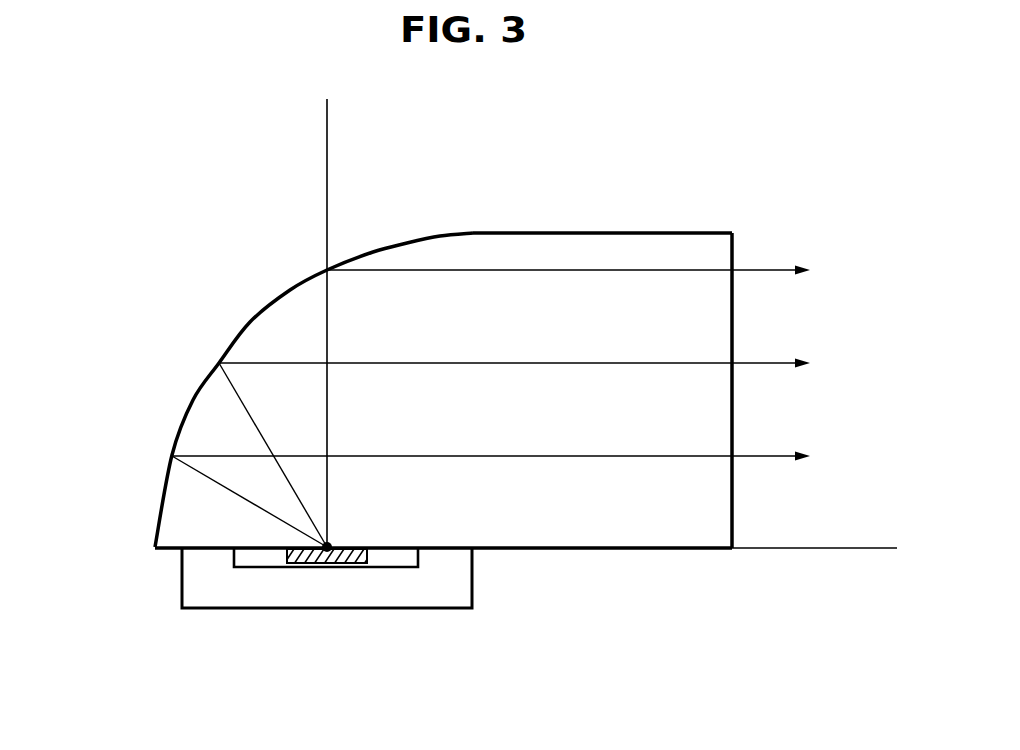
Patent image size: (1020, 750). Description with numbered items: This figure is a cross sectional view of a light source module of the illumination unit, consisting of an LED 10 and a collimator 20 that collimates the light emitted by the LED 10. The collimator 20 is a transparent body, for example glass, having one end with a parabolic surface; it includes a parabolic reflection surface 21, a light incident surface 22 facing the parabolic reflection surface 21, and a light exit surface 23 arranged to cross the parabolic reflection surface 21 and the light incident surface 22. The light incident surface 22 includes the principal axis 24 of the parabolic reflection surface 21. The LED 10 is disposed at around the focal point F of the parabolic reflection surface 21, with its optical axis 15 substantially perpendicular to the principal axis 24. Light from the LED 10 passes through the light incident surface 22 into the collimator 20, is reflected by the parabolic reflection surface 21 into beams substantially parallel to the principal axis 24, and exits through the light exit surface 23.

The LED 10 is at (170, 574).
The optical axis 15 is at (327, 197).
The collimator 20 is at (482, 376).
The parabolic reflection surface 21 is at (250, 322).
The light incident surface 22 is at (600, 549).
The light exit surface 23 is at (733, 255).
The principal axis 24 is at (817, 548).
The focal point F is at (330, 545).